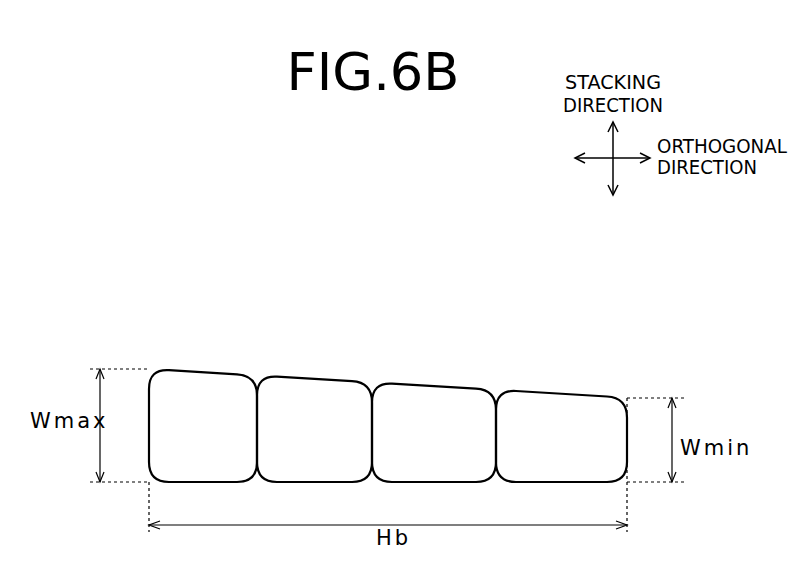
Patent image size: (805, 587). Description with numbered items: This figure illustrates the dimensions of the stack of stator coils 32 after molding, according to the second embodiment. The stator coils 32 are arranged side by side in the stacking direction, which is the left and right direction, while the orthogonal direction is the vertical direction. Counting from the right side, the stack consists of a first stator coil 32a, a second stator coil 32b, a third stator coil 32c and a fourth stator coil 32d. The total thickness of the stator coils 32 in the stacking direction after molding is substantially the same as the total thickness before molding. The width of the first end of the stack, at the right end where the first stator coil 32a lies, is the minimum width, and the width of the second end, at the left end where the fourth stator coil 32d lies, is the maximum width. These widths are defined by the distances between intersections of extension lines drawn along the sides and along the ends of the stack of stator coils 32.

The stator coils 32 is at (297, 478).
The first stator coil 32a is at (558, 412).
The second stator coil 32b is at (437, 403).
The third stator coil 32c is at (321, 394).
The fourth stator coil 32d is at (222, 389).